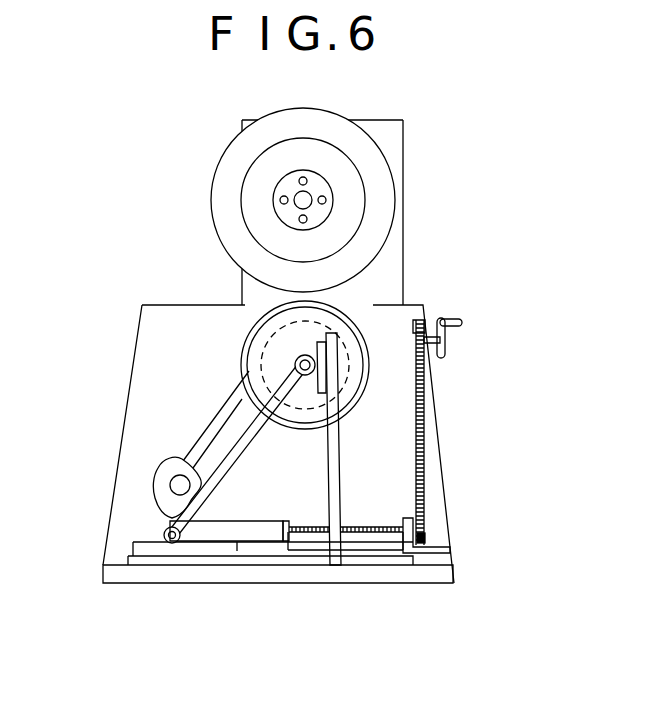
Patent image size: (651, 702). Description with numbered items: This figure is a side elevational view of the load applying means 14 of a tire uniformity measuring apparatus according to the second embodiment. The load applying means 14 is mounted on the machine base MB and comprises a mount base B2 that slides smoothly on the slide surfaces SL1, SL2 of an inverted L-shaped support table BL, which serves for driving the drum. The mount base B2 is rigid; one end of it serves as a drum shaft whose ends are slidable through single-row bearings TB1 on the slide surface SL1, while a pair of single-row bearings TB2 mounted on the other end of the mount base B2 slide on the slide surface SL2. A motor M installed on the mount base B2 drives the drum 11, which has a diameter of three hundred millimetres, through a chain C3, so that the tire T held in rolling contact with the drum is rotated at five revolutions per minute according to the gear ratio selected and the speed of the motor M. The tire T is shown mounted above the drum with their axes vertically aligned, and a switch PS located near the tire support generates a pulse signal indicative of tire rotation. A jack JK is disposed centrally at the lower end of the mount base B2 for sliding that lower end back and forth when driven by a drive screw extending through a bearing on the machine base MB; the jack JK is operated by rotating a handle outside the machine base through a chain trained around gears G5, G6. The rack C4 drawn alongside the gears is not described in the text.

The tire T is at (300, 109).
The drum 11 is at (257, 343).
The gear G6 is at (416, 322).
The chain C3 is at (210, 432).
The motor M is at (168, 473).
The single-row bearings TB1 is at (306, 375).
The slide surface SL1 is at (327, 386).
The mount base B2 is at (212, 492).
The jack JK is at (283, 523).
The switch PS is at (368, 527).
The rack C4 is at (425, 474).
The load applying means 14 is at (456, 498).
The single-row bearings TB2 is at (165, 537).
The gear G5 is at (426, 535).
The slide surface SL2 is at (172, 546).
The machine base MB is at (263, 567).
The support table BL is at (326, 558).